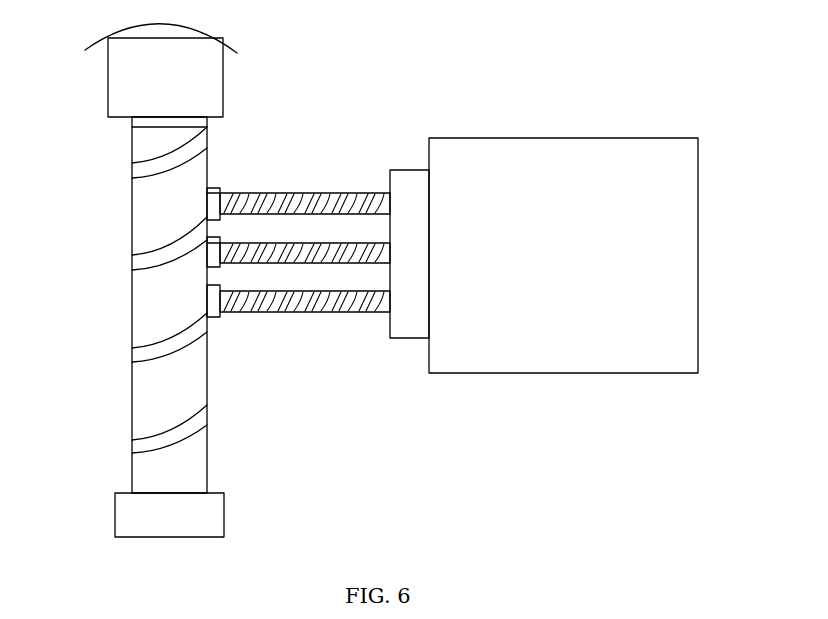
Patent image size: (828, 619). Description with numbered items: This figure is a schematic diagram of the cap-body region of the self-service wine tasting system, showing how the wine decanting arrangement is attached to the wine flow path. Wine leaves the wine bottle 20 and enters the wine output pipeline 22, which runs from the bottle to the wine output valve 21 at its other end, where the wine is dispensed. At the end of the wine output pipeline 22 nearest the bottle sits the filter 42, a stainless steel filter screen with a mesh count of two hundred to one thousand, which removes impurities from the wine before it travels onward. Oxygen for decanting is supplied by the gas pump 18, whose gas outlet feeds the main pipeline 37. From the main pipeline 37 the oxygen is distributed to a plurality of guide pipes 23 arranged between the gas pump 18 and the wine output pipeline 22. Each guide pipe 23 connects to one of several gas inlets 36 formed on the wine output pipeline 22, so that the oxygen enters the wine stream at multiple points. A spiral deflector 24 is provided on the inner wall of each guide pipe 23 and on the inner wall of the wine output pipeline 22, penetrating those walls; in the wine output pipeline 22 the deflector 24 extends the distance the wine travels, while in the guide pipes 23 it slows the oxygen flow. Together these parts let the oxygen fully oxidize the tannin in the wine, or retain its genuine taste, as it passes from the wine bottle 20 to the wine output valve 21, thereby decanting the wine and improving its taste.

The gas pump 18 is at (573, 337).
The wine bottle 20 is at (120, 85).
The wine output valve 21 is at (116, 517).
The wine output pipeline 22 is at (137, 203).
The guide pipe 23 is at (242, 313).
The deflector 24 is at (263, 195).
The gas inlet 36 is at (208, 317).
The main pipeline 37 is at (412, 170).
The filter 42 is at (130, 122).